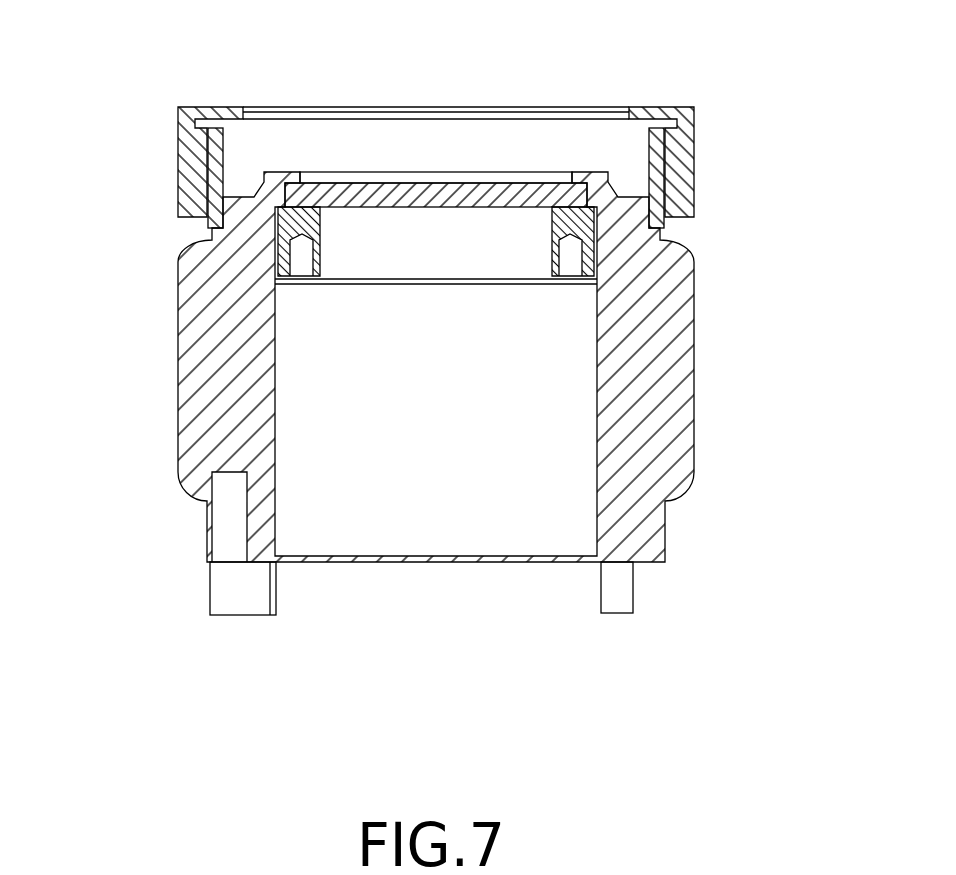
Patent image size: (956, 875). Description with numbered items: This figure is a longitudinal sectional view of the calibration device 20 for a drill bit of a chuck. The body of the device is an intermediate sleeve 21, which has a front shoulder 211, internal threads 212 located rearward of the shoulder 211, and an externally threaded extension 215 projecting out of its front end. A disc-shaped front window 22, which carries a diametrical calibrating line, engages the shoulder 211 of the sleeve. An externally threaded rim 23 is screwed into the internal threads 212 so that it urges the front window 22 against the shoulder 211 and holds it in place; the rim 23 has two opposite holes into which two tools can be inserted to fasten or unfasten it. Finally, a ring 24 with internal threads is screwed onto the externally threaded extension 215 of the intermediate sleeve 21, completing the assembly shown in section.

The calibration device 20 is at (677, 612).
The intermediate sleeve 21 is at (663, 437).
The front shoulder 211 is at (578, 178).
The internal threads 212 is at (560, 284).
The externally threaded extension 215 is at (205, 163).
The front window 22 is at (358, 183).
The externally threaded rim 23 is at (280, 228).
The ring 24 is at (685, 157).